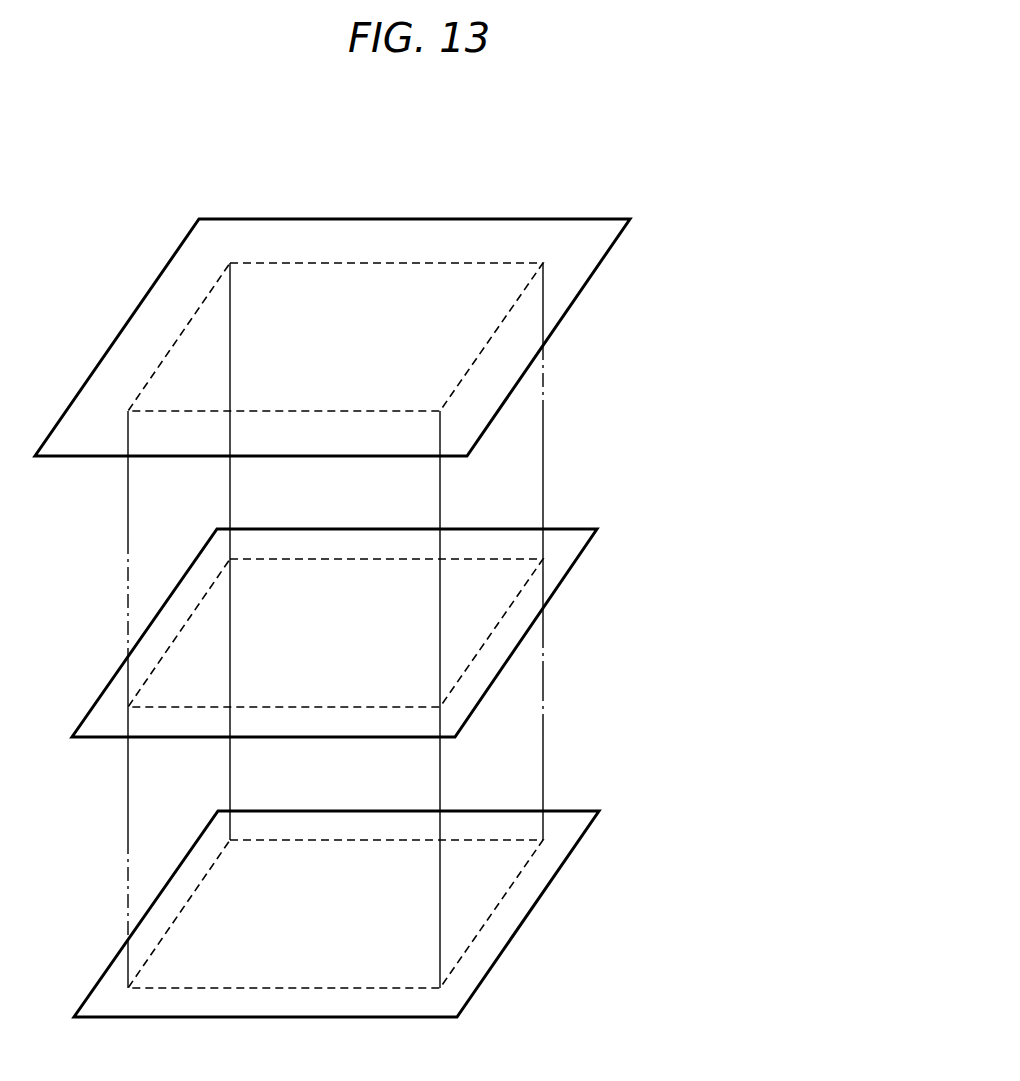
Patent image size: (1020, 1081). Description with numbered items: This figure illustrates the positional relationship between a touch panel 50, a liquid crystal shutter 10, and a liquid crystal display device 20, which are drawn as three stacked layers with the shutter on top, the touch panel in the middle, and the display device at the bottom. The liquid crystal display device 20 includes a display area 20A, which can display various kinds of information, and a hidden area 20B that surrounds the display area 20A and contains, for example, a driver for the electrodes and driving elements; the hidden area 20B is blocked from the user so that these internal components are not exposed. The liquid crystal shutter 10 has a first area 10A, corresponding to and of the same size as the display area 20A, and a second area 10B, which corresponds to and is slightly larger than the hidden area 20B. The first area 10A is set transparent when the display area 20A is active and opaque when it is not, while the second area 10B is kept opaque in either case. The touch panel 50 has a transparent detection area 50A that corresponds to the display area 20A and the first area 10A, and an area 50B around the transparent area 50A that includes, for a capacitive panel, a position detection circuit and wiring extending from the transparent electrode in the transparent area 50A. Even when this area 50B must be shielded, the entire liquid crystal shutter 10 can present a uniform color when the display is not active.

The liquid crystal shutter 10 is at (426, 291).
The first area 10A is at (333, 293).
The second area 10B is at (568, 277).
The touch panel 50 is at (438, 597).
The transparent area 50A is at (498, 587).
The area around the transparent area 50B is at (513, 632).
The liquid crystal display device 20 is at (439, 895).
The display area 20A is at (485, 883).
The hidden area 20B is at (485, 950).